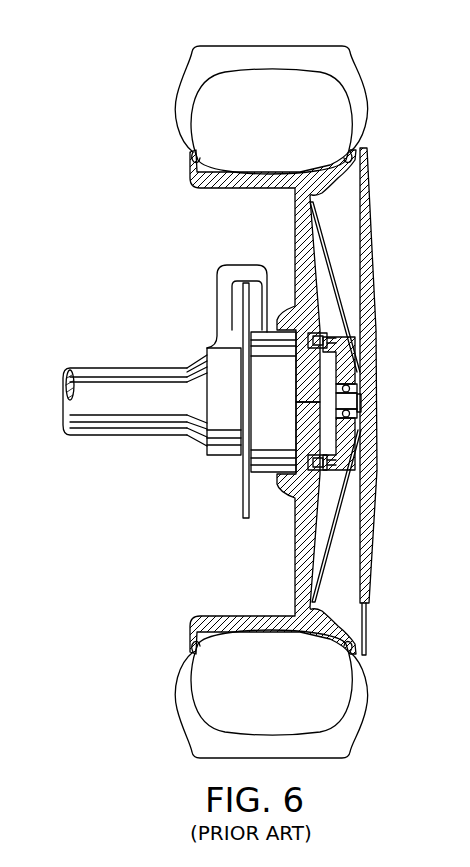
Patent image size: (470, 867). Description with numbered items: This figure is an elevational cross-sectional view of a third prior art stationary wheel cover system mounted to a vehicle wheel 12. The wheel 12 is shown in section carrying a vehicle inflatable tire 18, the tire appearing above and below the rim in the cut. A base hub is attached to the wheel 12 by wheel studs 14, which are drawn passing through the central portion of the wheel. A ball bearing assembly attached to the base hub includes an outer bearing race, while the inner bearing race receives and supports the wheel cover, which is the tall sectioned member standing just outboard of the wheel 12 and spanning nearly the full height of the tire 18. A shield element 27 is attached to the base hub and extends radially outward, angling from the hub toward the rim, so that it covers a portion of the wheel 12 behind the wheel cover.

The vehicle wheel 12 is at (294, 578).
The wheel studs 14 is at (294, 492).
The vehicle inflatable tire 18 is at (368, 113).
The shield element 27 is at (326, 546).